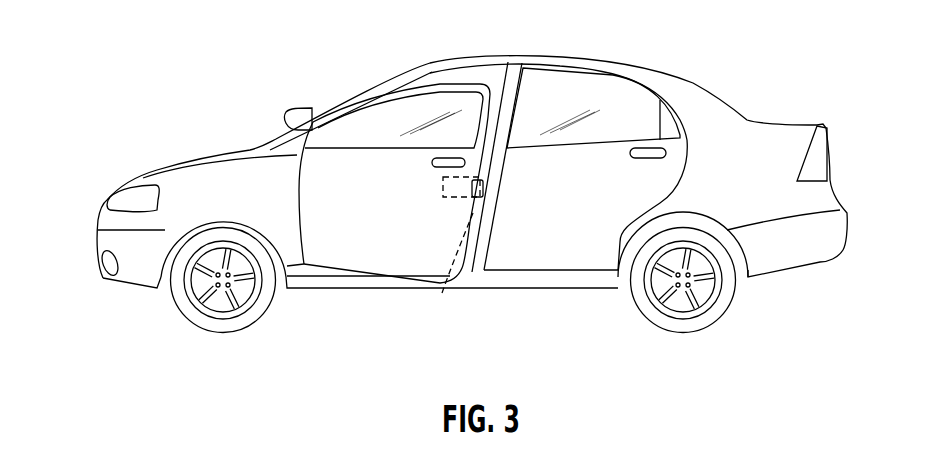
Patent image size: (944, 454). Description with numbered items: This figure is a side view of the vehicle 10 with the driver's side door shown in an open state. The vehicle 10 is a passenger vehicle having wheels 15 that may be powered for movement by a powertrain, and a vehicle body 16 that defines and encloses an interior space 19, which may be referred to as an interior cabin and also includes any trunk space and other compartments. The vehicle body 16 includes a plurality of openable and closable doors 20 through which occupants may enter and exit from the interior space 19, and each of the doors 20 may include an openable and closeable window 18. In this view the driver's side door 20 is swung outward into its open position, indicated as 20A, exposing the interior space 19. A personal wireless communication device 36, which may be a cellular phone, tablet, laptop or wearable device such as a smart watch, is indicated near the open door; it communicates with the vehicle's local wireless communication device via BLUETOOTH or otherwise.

The vehicle 10 is at (113, 40).
The wheels 15 is at (213, 323).
The vehicle body 16 is at (200, 183).
The window 18 is at (430, 107).
The interior space 19 is at (500, 88).
The door 20 is at (558, 260).
The door in open position 20A is at (368, 257).
The personal wireless communication device 36 is at (442, 293).